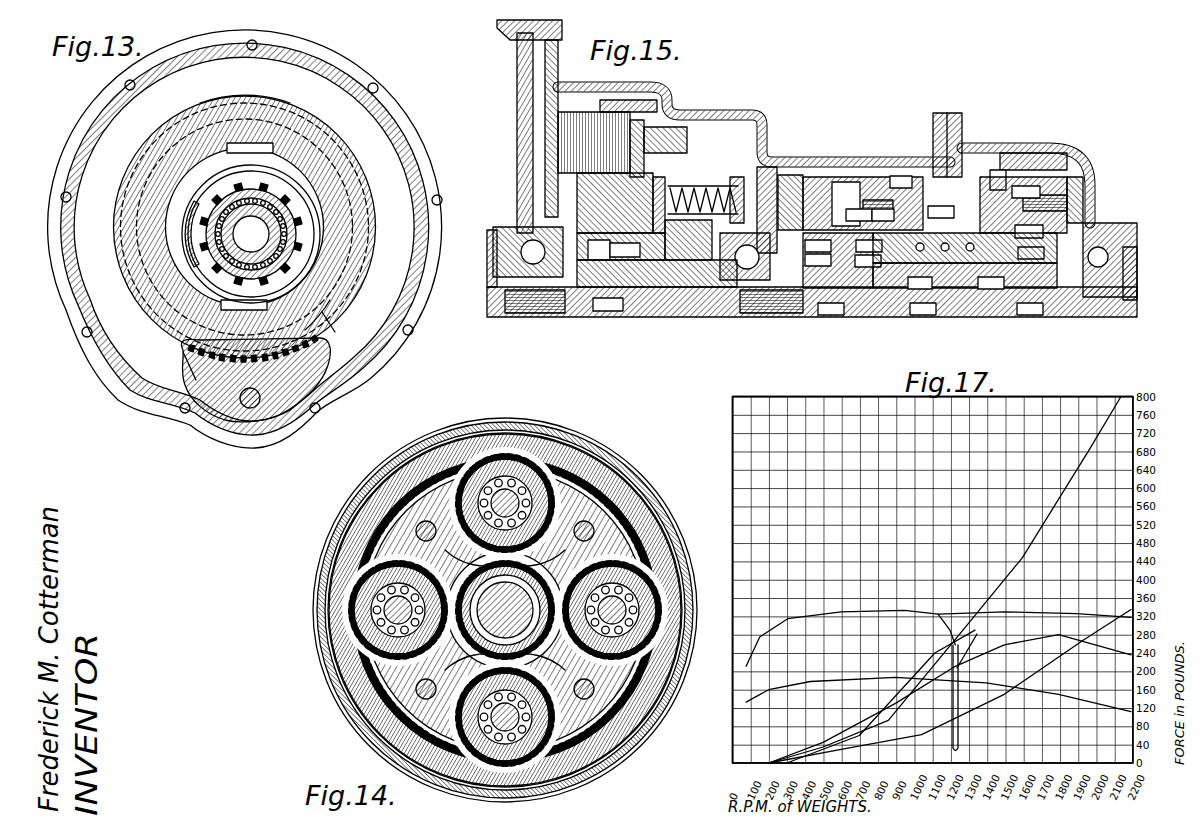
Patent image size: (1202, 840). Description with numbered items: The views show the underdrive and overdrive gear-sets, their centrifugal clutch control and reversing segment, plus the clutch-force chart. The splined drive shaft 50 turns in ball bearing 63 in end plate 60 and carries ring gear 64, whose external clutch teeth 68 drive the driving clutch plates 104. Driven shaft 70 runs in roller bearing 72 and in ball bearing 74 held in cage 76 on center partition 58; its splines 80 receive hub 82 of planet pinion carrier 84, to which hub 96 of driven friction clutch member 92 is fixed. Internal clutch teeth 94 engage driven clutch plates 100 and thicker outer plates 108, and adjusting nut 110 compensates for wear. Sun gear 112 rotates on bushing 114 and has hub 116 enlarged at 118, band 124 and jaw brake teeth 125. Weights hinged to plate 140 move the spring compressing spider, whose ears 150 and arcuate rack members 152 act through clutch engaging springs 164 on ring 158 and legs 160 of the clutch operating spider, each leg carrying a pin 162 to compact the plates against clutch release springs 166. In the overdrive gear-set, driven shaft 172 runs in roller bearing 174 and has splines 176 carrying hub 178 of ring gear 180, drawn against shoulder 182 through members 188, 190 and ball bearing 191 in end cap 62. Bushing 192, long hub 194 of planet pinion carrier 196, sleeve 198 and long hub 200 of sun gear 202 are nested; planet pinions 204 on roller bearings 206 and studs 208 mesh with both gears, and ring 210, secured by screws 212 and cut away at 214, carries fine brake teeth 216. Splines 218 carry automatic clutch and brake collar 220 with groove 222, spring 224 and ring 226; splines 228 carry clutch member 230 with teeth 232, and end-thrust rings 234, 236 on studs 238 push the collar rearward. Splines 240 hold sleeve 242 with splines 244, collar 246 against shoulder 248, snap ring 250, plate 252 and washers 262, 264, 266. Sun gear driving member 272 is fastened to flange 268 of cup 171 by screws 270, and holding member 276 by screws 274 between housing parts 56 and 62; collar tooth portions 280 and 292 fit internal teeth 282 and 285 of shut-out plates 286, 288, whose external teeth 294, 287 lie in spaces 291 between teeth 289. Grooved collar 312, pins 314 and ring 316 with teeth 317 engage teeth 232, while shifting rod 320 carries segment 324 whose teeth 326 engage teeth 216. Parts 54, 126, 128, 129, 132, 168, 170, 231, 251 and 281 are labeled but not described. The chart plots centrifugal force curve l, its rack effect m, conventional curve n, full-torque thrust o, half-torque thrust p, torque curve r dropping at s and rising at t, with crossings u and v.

In FIG. 15, the splined drive shaft 50 is at (487, 298).
In FIG. 15, the input shaft cap 54 is at (503, 36).
In FIG. 15, the housing part 56 is at (558, 48).
In FIG. 15, the center partition 58 is at (770, 158).
In FIG. 15, the end plate 60 is at (517, 99).
In FIG. 13, the end cap 62 is at (338, 58).
In FIG. 14, the end cap 62 is at (590, 442).
In FIG. 15, the end cap 62 is at (1080, 150).
In FIG. 15, the ball bearing 63 is at (533, 252).
In FIG. 15, the ring gear 64 is at (545, 182).
In FIG. 15, the external clutch teeth 68 is at (545, 165).
In FIG. 15, the driven shaft 70 is at (630, 287).
In FIG. 15, the roller bearing 72 is at (530, 313).
In FIG. 15, the ball bearing 74 is at (745, 256).
In FIG. 15, the cage 76 is at (712, 226).
In FIG. 15, the external splines 80 is at (612, 300).
In FIG. 15, the internally splined hub 82 is at (590, 300).
In FIG. 15, the planet pinion carrier 84 is at (577, 210).
In FIG. 15, the driven friction clutch member 92 is at (630, 118).
In FIG. 15, the internal clutch teeth 94 is at (645, 100).
In FIG. 15, the hub 96 is at (615, 203).
In FIG. 15, the driven clutch plates 100 is at (590, 112).
In FIG. 15, the driving clutch plates 104 is at (585, 190).
In FIG. 15, the outer driven clutch plates 108 is at (545, 152).
In FIG. 15, the adjusting nut 110 is at (575, 100).
In FIG. 15, the sun gear 112 is at (608, 305).
In FIG. 15, the bearing bushing 114 is at (597, 256).
In FIG. 15, the hub 116 is at (645, 290).
In FIG. 15, the enlarged portion 118 is at (672, 280).
In FIG. 15, the band 124 is at (678, 280).
In FIG. 15, the jaw brake teeth 125 is at (700, 270).
In FIG. 15, the ring 126 is at (685, 280).
In FIG. 15, the pin 128 is at (710, 275).
In FIG. 15, the collar 129 is at (660, 290).
In FIG. 15, the bore 132 is at (621, 246).
In FIG. 15, the plate 140 is at (665, 110).
In FIG. 15, the ears 150 is at (737, 186).
In FIG. 15, the arcuate rack members 152 is at (730, 184).
In FIG. 15, the ring 158 is at (655, 224).
In FIG. 15, the legs 160 is at (688, 150).
In FIG. 15, the pin 162 is at (688, 140).
In FIG. 15, the clutch engaging springs 164 is at (705, 184).
In FIG. 15, the clutch release springs 166 is at (675, 112).
In FIG. 15, the bearing race 168 is at (740, 300).
In FIG. 15, the keyway 170 is at (625, 250).
In FIG. 15, the cup 171 is at (789, 213).
In FIG. 13, the driven shaft 172 is at (251, 234).
In FIG. 14, the driven shaft 172 is at (505, 610).
In FIG. 15, the driven shaft 172 is at (748, 313).
In FIG. 15, the roller bearing 174 is at (770, 313).
In FIG. 15, the splines 176 is at (1115, 300).
In FIG. 15, the hub 178 is at (1137, 258).
In FIG. 14, the ring gear 180 is at (648, 506).
In FIG. 15, the ring gear 180 is at (1008, 153).
In FIG. 15, the shoulder 182 is at (1080, 300).
In FIG. 15, the intermediate member 188 is at (1130, 288).
In FIG. 15, the intermediate member 190 is at (1130, 272).
In FIG. 15, the ball bearing 191 is at (1098, 257).
In FIG. 15, the long bearing bushing 192 is at (978, 300).
In FIG. 15, the long hub 194 is at (900, 300).
In FIG. 15, the planet pinion carrier 196 is at (1092, 222).
In FIG. 15, the long bearing sleeve 198 is at (985, 290).
In FIG. 13, the long hub 200 is at (288, 240).
In FIG. 15, the long hub 200 is at (945, 265).
In FIG. 14, the sun gear 202 is at (535, 572).
In FIG. 15, the sun gear 202 is at (1010, 295).
In FIG. 14, the planet pinions 204 is at (545, 640).
In FIG. 14, the roller bearings 206 is at (534, 657).
In FIG. 14, the studs 208 is at (482, 657).
In FIG. 14, the ring 210 is at (600, 498).
In FIG. 15, the ring 210 is at (1031, 205).
In FIG. 14, the screws 212 is at (432, 545).
In FIG. 15, the screws 212 is at (1020, 212).
In FIG. 14, the cut-away places 214 is at (668, 534).
In FIG. 15, the cut-away places 214 is at (990, 248).
In FIG. 15, the fine brake teeth 216 is at (995, 172).
In FIG. 13, the long external splines 218 is at (300, 208).
In FIG. 15, the long external splines 218 is at (960, 265).
In FIG. 15, the automatic clutch and brake collar 220 is at (965, 289).
In FIG. 15, the deep groove 222 is at (905, 290).
In FIG. 13, the spring 224 is at (300, 272).
In FIG. 15, the ring 226 is at (1031, 253).
In FIG. 15, the external splines 228 is at (885, 300).
In FIG. 15, the clutch member 230 is at (891, 274).
In FIG. 15, the ring 231 is at (920, 283).
In FIG. 15, the fine clutch teeth 232 is at (991, 283).
In FIG. 15, the end-thrust ring 234 is at (862, 274).
In FIG. 15, the end-thrust ring 236 is at (868, 261).
In FIG. 15, the studs 238 is at (869, 246).
In FIG. 15, the splines 240 is at (852, 290).
In FIG. 15, the internally splined sleeve 242 is at (858, 295).
In FIG. 15, the external splines 244 is at (862, 300).
In FIG. 15, the internally splined collar 246 is at (838, 260).
In FIG. 15, the shoulder 248 is at (818, 260).
In FIG. 15, the snap ring 250 is at (820, 318).
In FIG. 15, the pin 251 is at (859, 215).
In FIG. 15, the internally splined plate 252 is at (831, 308).
In FIG. 15, the end-thrust washer 262 is at (866, 290).
In FIG. 15, the end-thrust washer 264 is at (1030, 308).
In FIG. 15, the end-thrust washer 266 is at (1062, 300).
In FIG. 15, the flange 268 is at (862, 183).
In FIG. 15, the screws 270 is at (862, 195).
In FIG. 15, the sun gear driving member 272 is at (885, 177).
In FIG. 13, the screws 274 is at (376, 86).
In FIG. 13, the sun gear holding member 276 is at (365, 310).
In FIG. 15, the sun gear holding member 276 is at (940, 128).
In FIG. 15, the smaller tooth portions 280 is at (905, 178).
In FIG. 15, the pin 281 is at (948, 225).
In FIG. 13, the internal teeth 282 is at (336, 333).
In FIG. 13, the internal teeth 285 is at (332, 342).
In FIG. 15, the shut-out plate 286 is at (925, 175).
In FIG. 13, the external teeth 287 is at (245, 227).
In FIG. 15, the external teeth 287 is at (930, 185).
In FIG. 13, the shut-out plate 288 is at (352, 152).
In FIG. 15, the shut-out plate 288 is at (935, 180).
In FIG. 13, the internal teeth 289 is at (254, 94).
In FIG. 13, the spaces 291 is at (330, 122).
In FIG. 15, the larger tooth portions 292 is at (941, 212).
In FIG. 15, the external teeth 294 is at (928, 190).
In FIG. 15, the grooved collar 312 is at (790, 187).
In FIG. 15, the pins 314 is at (790, 200).
In FIG. 15, the ring 316 is at (901, 181).
In FIG. 15, the fine internal teeth 317 is at (882, 215).
In FIG. 13, the shifting rod 320 is at (268, 432).
In FIG. 13, the segment 324 is at (328, 370).
In FIG. 13, the fine teeth 326 is at (186, 374).
In FIG. 17, the centrifugal force curve l is at (1020, 558).
In FIG. 17, the maximum torque thrust curve o is at (954, 609).
In FIG. 17, the torque curve r is at (851, 614).
In FIG. 17, the rack effect curve m is at (1007, 646).
In FIG. 17, the torque drop curve s is at (967, 651).
In FIG. 17, the half torque thrust curve p is at (887, 680).
In FIG. 17, the conventional weight curve n is at (901, 736).
In FIG. 17, the crossing point v is at (941, 716).
In FIG. 17, the crossing point u is at (951, 666).
In FIG. 17, the torque rise curve t is at (951, 748).